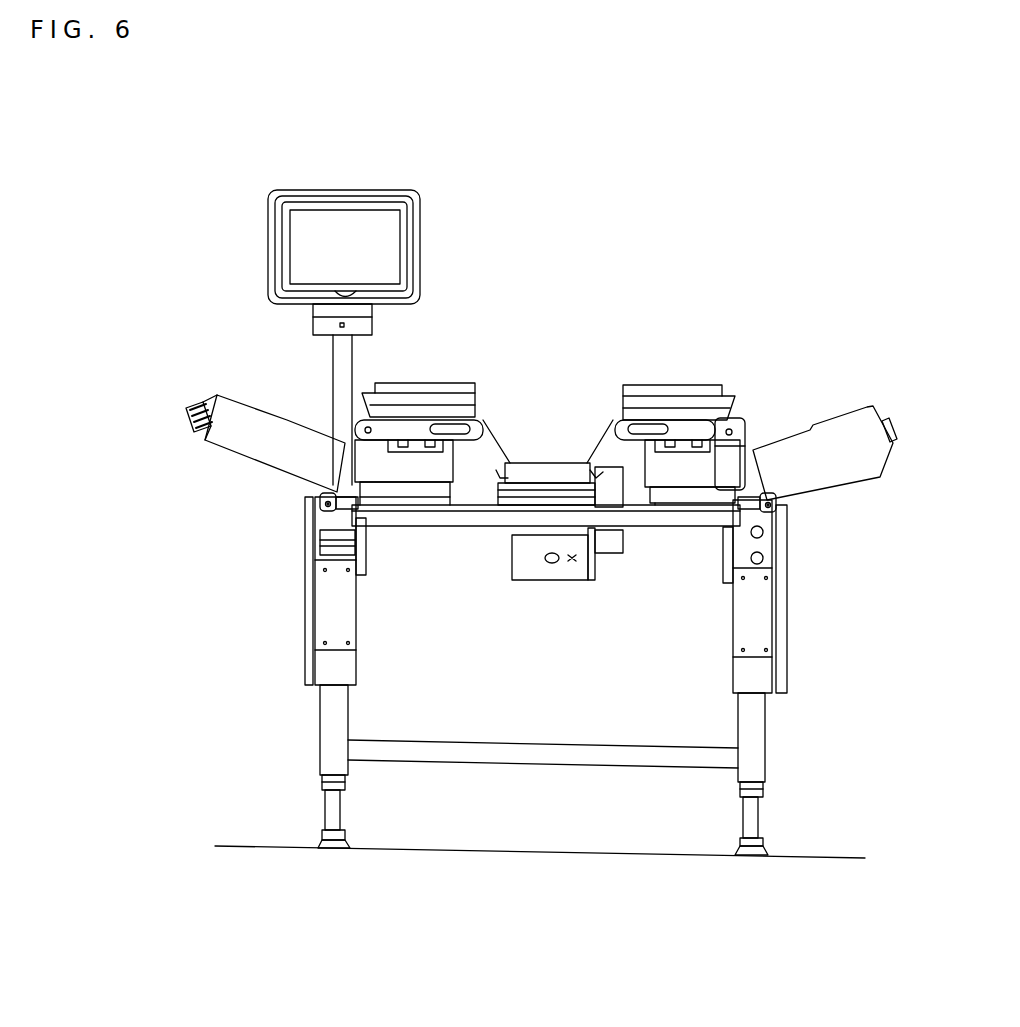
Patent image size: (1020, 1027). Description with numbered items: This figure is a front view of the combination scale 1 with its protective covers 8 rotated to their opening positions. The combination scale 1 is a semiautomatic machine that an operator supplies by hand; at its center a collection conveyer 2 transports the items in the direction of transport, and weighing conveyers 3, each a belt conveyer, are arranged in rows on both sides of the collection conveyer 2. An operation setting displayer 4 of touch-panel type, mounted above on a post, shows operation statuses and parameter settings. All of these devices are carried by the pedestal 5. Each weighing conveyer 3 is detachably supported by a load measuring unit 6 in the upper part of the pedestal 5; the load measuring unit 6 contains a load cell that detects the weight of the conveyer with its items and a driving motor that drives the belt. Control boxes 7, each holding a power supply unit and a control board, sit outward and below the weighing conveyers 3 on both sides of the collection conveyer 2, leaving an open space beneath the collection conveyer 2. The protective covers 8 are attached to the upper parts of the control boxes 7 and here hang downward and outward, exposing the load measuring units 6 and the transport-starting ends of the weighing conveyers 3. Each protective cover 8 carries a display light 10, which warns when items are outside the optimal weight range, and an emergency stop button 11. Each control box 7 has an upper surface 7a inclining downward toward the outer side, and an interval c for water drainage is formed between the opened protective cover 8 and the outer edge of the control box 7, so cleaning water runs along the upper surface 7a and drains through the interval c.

The combination scale 1 is at (590, 370).
The collection conveyer 2 is at (556, 463).
The weighing conveyers 3 is at (424, 386).
The operation setting displayer 4 is at (422, 232).
The pedestal 5 is at (767, 724).
The load measuring units 6 is at (420, 475).
The control boxes 7 is at (305, 630).
The upper surface 7a is at (340, 490).
The protective covers 8 is at (243, 470).
The display lights 10 is at (895, 425).
The emergency stop button 11 is at (189, 404).
The interval c is at (302, 497).